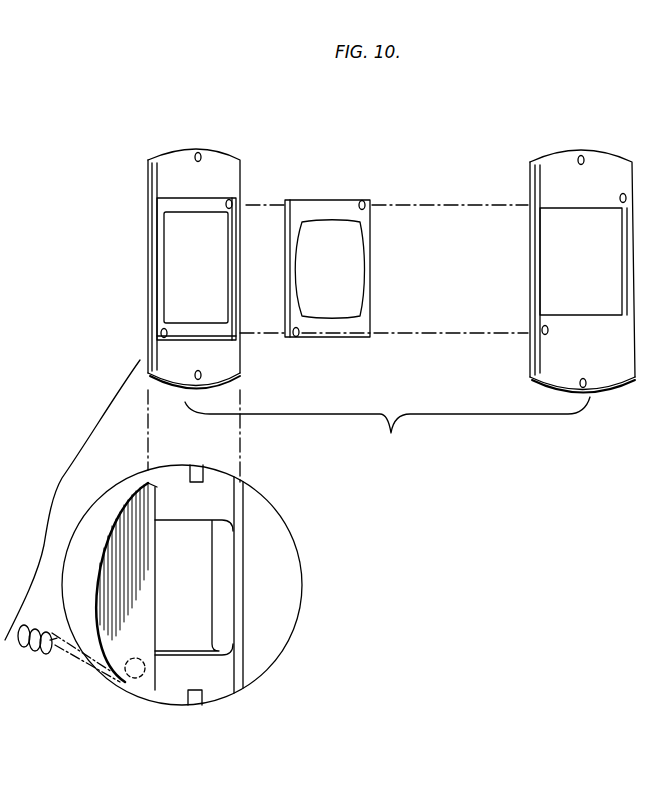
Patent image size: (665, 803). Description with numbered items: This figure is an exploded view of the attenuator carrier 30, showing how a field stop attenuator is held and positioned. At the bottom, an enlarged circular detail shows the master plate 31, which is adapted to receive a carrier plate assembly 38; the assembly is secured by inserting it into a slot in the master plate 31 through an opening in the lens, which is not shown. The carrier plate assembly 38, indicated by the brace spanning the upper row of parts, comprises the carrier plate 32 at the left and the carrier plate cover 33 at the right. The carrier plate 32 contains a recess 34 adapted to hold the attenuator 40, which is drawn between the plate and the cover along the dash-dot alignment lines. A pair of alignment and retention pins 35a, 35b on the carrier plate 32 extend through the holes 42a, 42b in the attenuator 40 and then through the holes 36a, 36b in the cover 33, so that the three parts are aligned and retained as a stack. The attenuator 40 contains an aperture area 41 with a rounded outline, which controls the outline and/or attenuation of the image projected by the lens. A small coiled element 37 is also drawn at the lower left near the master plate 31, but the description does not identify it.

The attenuator carrier 30 is at (58, 483).
The master plate 31 is at (277, 650).
The carrier plate 32 is at (163, 156).
The carrier plate cover 33 is at (590, 150).
The recess 34 is at (167, 206).
The alignment and retention pin 35a is at (234, 204).
The alignment and retention pin 35b is at (148, 334).
The hole 36a is at (627, 198).
The hole 36b is at (545, 335).
The spring 37 is at (30, 650).
The carrier plate assembly 38 is at (387, 431).
The attenuator 40 is at (324, 200).
The aperture area 41 is at (350, 287).
The hole 42a is at (368, 205).
The hole 42b is at (298, 337).